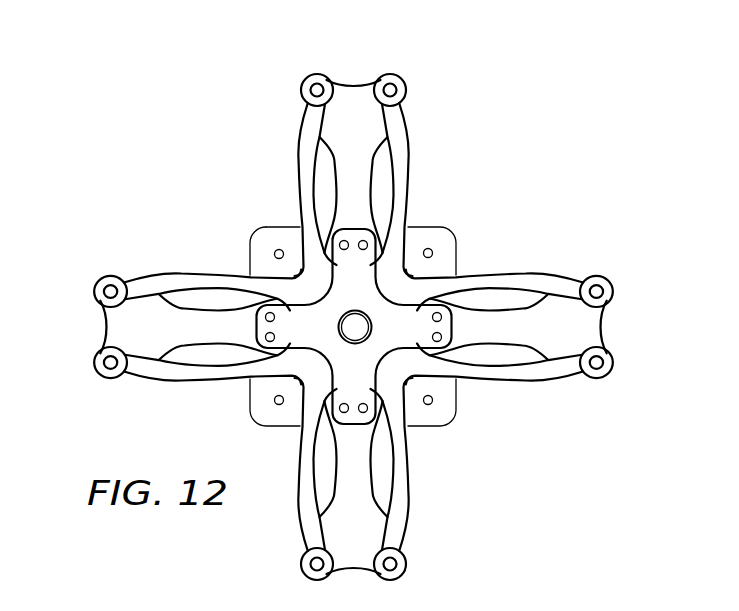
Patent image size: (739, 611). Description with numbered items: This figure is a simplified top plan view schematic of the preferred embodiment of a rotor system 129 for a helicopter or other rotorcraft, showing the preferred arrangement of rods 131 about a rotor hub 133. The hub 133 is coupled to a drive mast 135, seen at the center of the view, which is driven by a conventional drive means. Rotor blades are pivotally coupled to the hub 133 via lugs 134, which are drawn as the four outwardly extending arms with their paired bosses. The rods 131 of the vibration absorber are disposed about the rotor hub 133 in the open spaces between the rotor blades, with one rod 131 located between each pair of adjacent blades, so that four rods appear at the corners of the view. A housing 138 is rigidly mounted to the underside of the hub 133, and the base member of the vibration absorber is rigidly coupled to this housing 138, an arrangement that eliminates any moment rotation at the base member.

The rotor system 129 is at (251, 182).
The rods 131 is at (277, 252).
The rotor hub 133 is at (413, 273).
The lugs 134 is at (349, 88).
The drive mast 135 is at (338, 322).
The housing 138 is at (456, 394).